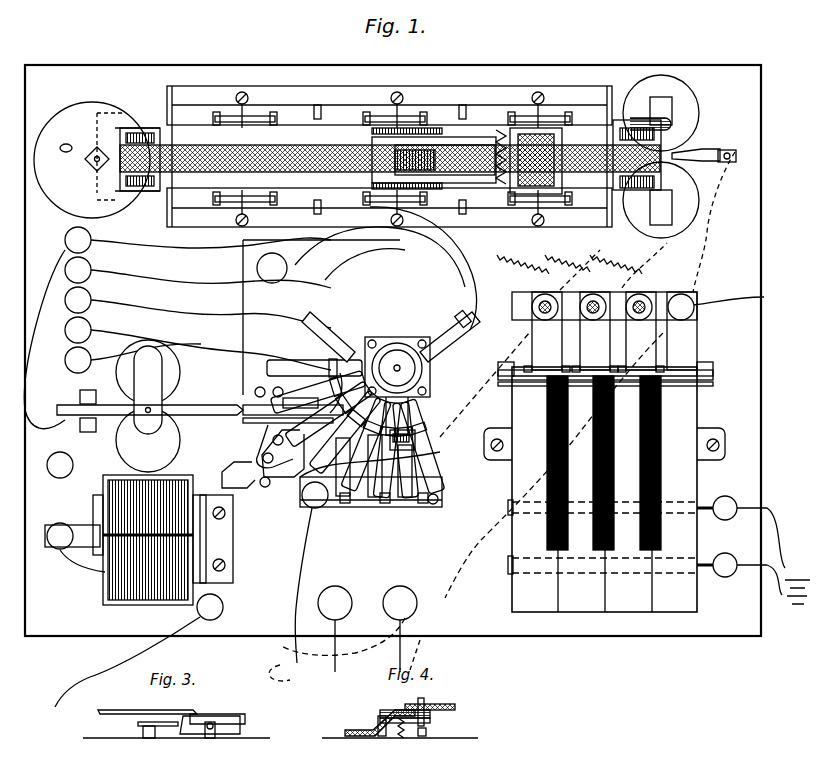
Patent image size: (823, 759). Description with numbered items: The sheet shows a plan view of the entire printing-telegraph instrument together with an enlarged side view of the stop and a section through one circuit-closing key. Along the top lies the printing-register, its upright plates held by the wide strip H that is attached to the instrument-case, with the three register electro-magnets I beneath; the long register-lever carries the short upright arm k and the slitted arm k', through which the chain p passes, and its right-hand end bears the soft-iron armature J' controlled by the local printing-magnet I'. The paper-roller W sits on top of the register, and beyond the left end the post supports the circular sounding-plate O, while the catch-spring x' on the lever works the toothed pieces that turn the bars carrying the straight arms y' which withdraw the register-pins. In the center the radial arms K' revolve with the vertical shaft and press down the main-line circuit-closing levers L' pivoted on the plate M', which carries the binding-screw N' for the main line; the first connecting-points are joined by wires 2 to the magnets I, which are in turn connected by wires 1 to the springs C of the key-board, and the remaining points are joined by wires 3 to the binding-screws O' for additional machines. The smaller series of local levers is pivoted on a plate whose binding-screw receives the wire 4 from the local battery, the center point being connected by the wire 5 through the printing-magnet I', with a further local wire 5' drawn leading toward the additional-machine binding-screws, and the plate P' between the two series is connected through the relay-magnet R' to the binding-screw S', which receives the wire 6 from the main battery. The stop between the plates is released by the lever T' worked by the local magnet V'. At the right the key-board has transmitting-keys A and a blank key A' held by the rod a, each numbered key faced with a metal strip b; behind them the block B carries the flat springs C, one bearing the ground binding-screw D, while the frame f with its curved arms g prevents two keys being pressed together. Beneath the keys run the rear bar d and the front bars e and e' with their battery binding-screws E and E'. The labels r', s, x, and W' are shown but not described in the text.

In FIG. 1, the wide strip of metal H is at (389, 156).
In FIG. 1, the upright electro-magnets I is at (379, 152).
In FIG. 1, the chain p is at (118, 193).
In FIG. 1, the circular sounding-plate O is at (92, 160).
In FIG. 1, the short upright arm k is at (392, 159).
In FIG. 1, the upright arm k' is at (388, 160).
In FIG. 1, the paper-roller W is at (434, 158).
In FIG. 1, the rack x is at (367, 133).
In FIG. 1, the spring s is at (496, 157).
In FIG. 1, the upright local magnet I' is at (602, 157).
In FIG. 1, the soft-iron armature J' is at (661, 156).
In FIG. 1, the connecting rod r' is at (704, 146).
In FIG. 1, the wire 5 is at (714, 222).
In FIG. 1, the binding-screws O' is at (69, 352).
In FIG. 1, the wires 3 is at (177, 333).
In FIG. 1, the local magnet V' is at (155, 406).
In FIG. 1, the lever T' is at (150, 411).
In FIG. 1, the relay-magnet R' is at (139, 540).
In FIG. 1, the binding-screw S' is at (217, 607).
In FIG. 1, the wire 6 is at (127, 662).
In FIG. 1, the metal plate M' is at (321, 317).
In FIG. 1, the binding-screw N' is at (272, 268).
In FIG. 1, the wires 2 is at (386, 268).
In FIG. 1, the circuit-closing levers L' is at (356, 428).
In FIG. 1, the arms K' is at (409, 386).
In FIG. 1, the upright catch-spring x' is at (356, 369).
In FIG. 1, the lever W' is at (257, 446).
In FIG. 1, the metal plate P' is at (263, 459).
In FIG. 1, the wire 4 is at (304, 585).
In FIG. 1, the circuit wire 5' is at (551, 465).
In FIG. 1, the transmitting-keys A is at (604, 489).
In FIG. 1, the blank key A' is at (606, 568).
In FIG. 1, the short curved arms g is at (594, 463).
In FIG. 1, the square metal frame f is at (598, 381).
In FIG. 1, the metal bar d is at (609, 368).
In FIG. 1, the flat metal springs C is at (604, 331).
In FIG. 1, the block B is at (583, 307).
In FIG. 1, the binding-screw D is at (716, 307).
In FIG. 1, the wires 1 is at (582, 266).
In FIG. 1, the metal strip b is at (592, 358).
In FIG. 1, the rod a is at (604, 446).
In FIG. 1, the metal bar e is at (594, 507).
In FIG. 1, the metal bar e' is at (593, 565).
In FIG. 1, the binding-screw E is at (741, 532).
In FIG. 1, the binding-screw E' is at (753, 578).
In FIG. 3, the straight arms y' is at (147, 703).